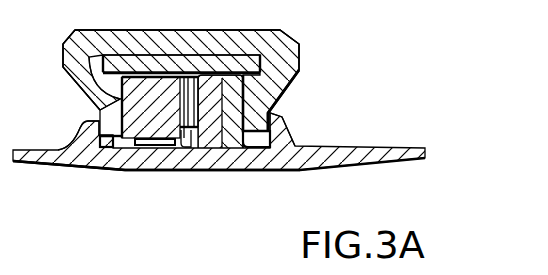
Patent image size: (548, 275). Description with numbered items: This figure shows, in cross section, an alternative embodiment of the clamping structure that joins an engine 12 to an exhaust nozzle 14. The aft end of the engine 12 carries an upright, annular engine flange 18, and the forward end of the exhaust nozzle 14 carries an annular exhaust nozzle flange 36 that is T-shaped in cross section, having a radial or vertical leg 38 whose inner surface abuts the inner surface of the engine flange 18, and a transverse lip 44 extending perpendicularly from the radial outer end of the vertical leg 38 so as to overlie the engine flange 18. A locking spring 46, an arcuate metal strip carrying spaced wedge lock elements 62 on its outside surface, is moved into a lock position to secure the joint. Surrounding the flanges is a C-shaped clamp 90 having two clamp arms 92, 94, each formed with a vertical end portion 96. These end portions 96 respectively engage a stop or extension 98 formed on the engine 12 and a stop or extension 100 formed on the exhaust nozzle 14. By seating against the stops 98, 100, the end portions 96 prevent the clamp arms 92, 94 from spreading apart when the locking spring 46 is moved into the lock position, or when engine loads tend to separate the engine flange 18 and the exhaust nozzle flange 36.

The engine 12 is at (37, 166).
The exhaust nozzle 14 is at (412, 147).
The engine flange 18 is at (209, 141).
The exhaust nozzle flange 36 is at (250, 53).
The vertical leg 38 is at (236, 118).
The transverse lip 44 is at (185, 32).
The locking spring 46 is at (147, 103).
The wedge lock elements 62 is at (102, 30).
The C-shaped clamp 90 is at (305, 38).
The clamp arm 92 is at (82, 83).
The clamp arm 94 is at (301, 70).
The vertical end portion 96 is at (112, 148).
The stop or extension 98 is at (84, 136).
The stop or extension 100 is at (277, 133).